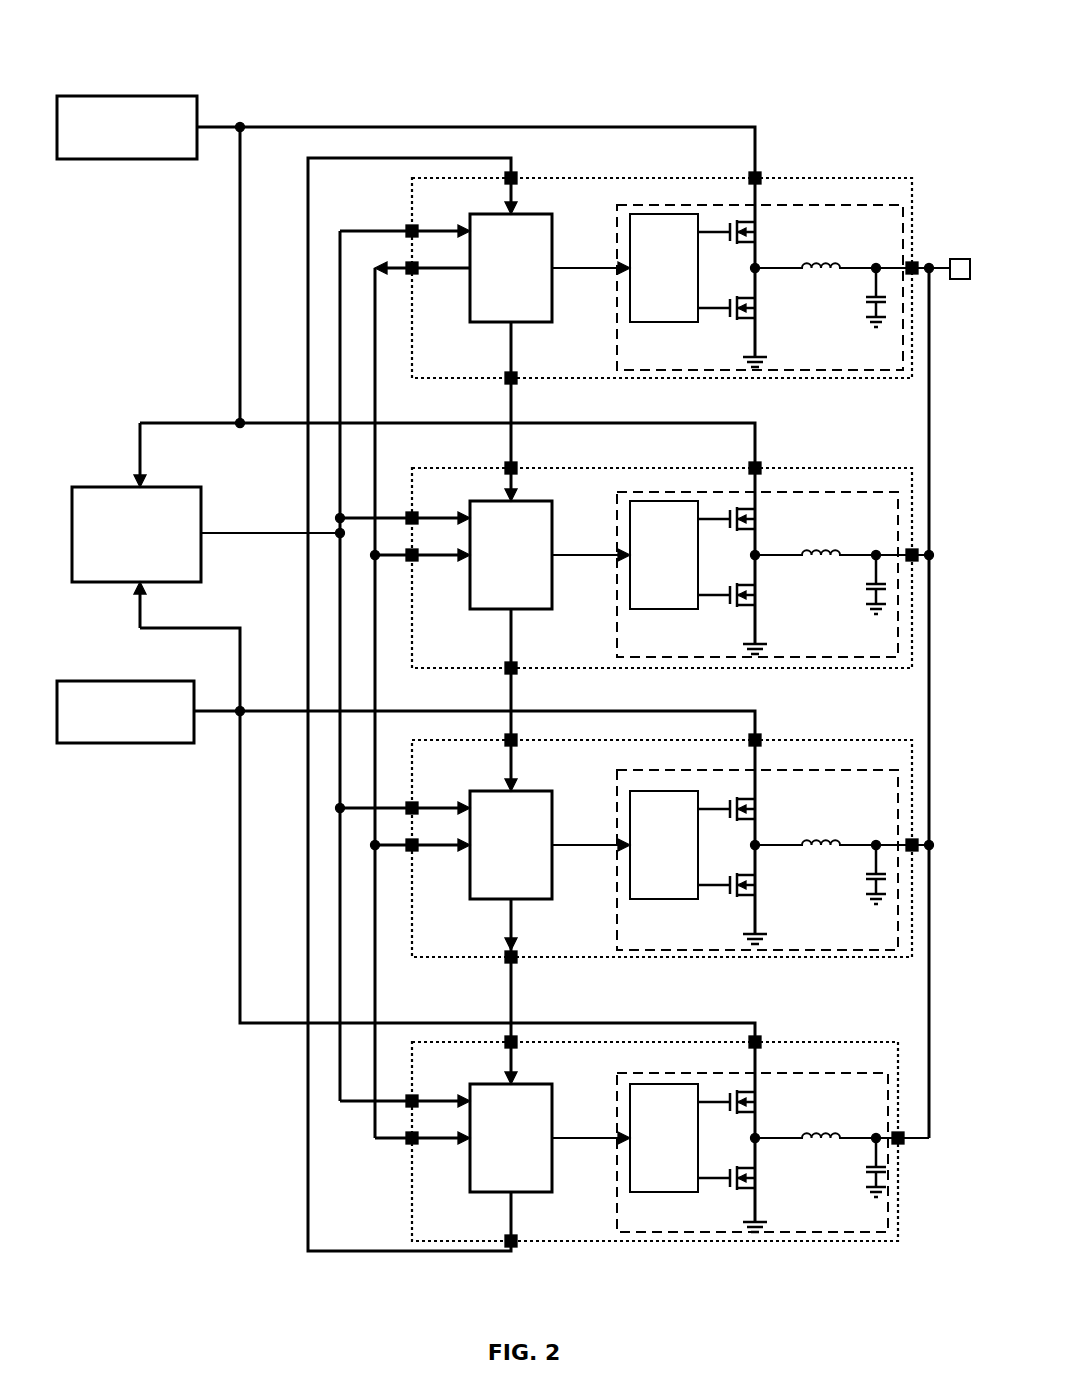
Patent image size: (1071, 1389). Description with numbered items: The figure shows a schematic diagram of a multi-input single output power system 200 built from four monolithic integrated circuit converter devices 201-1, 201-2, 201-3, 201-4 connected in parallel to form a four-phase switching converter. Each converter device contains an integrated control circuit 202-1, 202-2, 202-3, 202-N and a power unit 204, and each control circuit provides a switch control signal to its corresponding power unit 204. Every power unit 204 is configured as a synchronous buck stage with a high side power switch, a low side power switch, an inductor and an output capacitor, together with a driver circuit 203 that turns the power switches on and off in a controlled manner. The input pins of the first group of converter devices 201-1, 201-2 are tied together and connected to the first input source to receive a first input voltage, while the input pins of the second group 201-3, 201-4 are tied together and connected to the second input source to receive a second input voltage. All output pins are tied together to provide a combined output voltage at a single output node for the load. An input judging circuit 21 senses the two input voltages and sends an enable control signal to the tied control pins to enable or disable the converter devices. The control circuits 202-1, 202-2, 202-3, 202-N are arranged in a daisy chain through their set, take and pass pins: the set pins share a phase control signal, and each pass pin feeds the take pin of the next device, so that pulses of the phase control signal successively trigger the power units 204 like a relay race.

The multi-input single output power system 200 is at (814, 49).
The input judging circuit 21 is at (101, 583).
The converter device 201-1 is at (683, 379).
The converter device 201-2 is at (687, 669).
The converter device 201-3 is at (697, 958).
The converter device 201-4 is at (695, 1242).
The integrated control circuit 202-1 is at (482, 324).
The integrated control circuit 202-2 is at (488, 611).
The integrated control circuit 202-3 is at (482, 901).
The integrated control circuit 202-N is at (488, 1194).
The driver circuit 203 is at (652, 298).
The power unit 204 is at (806, 366).